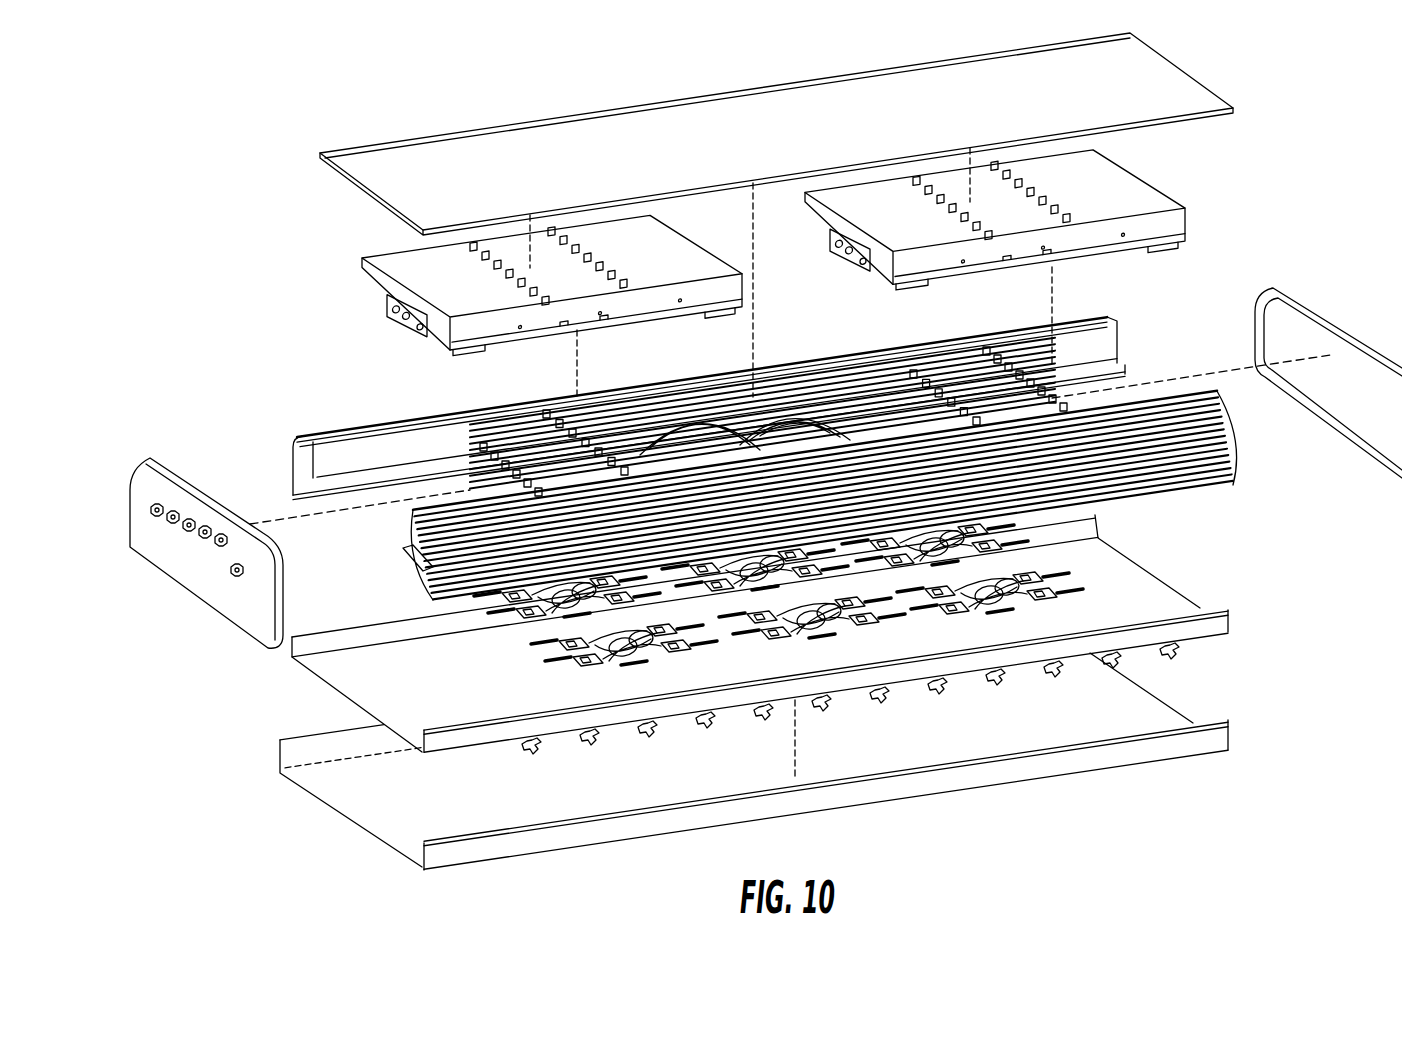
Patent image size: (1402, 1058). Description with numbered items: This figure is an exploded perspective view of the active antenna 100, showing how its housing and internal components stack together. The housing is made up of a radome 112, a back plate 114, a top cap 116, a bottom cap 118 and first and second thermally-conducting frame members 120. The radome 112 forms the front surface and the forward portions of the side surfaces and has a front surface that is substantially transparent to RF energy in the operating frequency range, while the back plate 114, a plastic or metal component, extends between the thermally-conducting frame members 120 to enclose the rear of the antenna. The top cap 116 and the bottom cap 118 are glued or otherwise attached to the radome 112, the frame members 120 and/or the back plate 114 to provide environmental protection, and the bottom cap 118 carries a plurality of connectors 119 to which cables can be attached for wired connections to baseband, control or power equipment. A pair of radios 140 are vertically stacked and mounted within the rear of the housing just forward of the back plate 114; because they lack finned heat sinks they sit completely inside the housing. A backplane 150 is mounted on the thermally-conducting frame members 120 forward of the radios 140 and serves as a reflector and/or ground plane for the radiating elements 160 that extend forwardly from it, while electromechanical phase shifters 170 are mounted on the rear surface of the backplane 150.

The active antenna 100 is at (234, 158).
The radome 112 is at (370, 825).
The back plate 114 is at (372, 160).
The top cap 116 is at (1287, 305).
The bottom cap 118 is at (150, 472).
The connectors 119 is at (157, 513).
The thermally-conducting frame members 120 is at (322, 432).
The radios 140 is at (370, 280).
The backplane 150 is at (325, 683).
The radiating elements 160 is at (580, 742).
The electromechanical phase shifters 170 is at (560, 665).